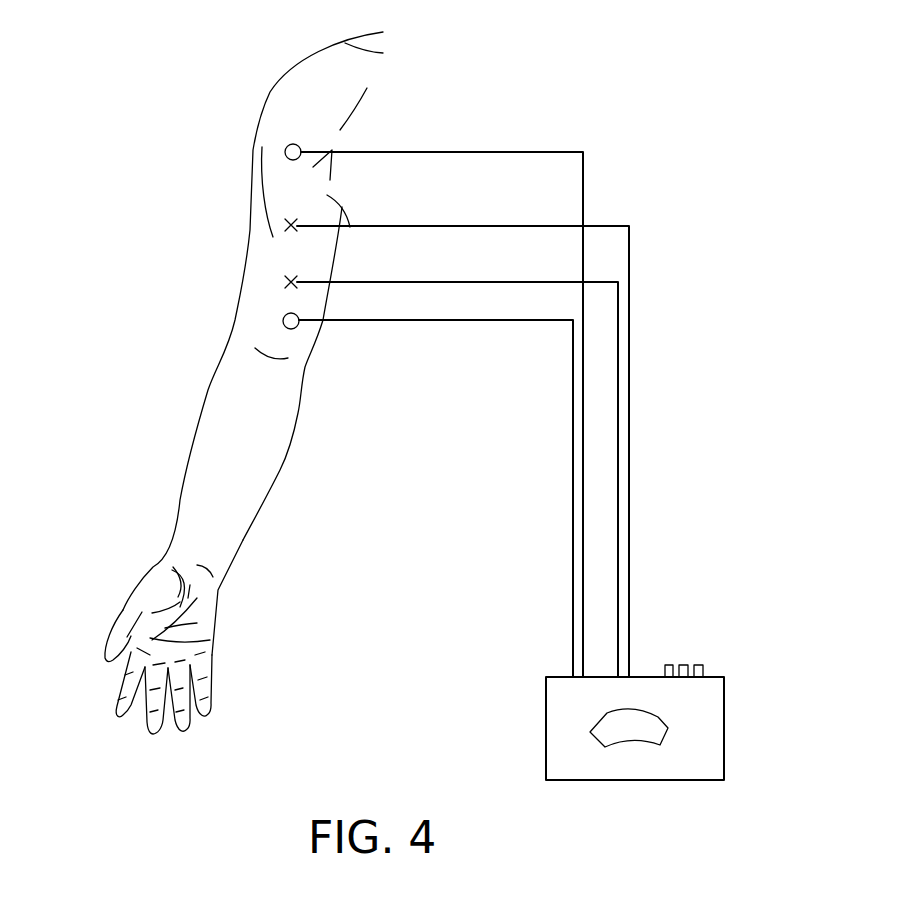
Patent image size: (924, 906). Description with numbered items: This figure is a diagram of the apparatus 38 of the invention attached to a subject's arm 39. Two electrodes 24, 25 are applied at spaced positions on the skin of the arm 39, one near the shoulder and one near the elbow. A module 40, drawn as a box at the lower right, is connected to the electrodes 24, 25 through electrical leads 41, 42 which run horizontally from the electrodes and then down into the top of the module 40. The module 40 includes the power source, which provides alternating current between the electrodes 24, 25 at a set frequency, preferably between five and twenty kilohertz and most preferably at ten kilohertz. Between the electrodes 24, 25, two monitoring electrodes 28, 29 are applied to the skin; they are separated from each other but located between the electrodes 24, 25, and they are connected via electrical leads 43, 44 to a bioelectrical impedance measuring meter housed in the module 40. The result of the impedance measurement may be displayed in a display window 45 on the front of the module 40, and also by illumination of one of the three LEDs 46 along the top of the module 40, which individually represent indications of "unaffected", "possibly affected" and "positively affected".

The electrode 24 is at (284, 148).
The electrode 25 is at (283, 317).
The monitoring electrode 28 is at (288, 222).
The monitoring electrode 29 is at (288, 280).
The apparatus 38 is at (810, 598).
The subject's arm 39 is at (220, 442).
The module 40 is at (546, 718).
The electrical lead 41 is at (440, 152).
The electrical lead 42 is at (375, 320).
The electrical lead 43 is at (413, 226).
The electrical lead 44 is at (377, 282).
The display window 45 is at (668, 733).
The LEDs 46 is at (698, 665).